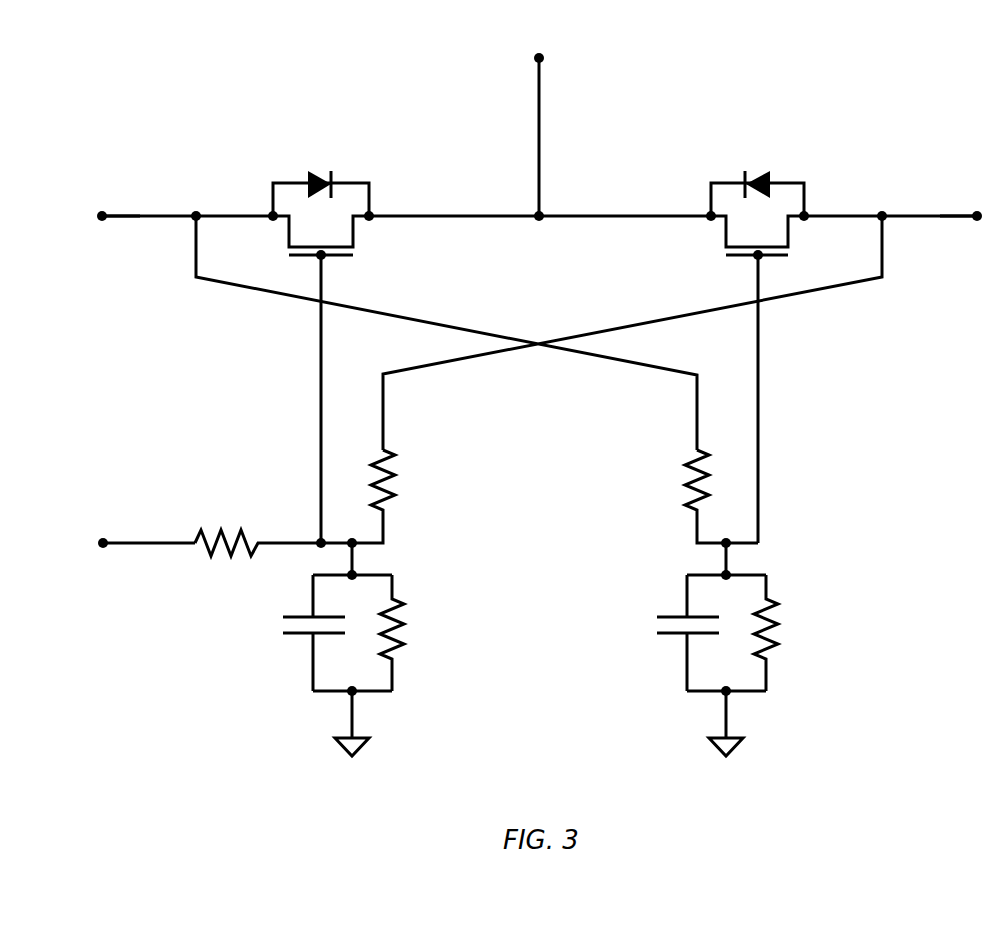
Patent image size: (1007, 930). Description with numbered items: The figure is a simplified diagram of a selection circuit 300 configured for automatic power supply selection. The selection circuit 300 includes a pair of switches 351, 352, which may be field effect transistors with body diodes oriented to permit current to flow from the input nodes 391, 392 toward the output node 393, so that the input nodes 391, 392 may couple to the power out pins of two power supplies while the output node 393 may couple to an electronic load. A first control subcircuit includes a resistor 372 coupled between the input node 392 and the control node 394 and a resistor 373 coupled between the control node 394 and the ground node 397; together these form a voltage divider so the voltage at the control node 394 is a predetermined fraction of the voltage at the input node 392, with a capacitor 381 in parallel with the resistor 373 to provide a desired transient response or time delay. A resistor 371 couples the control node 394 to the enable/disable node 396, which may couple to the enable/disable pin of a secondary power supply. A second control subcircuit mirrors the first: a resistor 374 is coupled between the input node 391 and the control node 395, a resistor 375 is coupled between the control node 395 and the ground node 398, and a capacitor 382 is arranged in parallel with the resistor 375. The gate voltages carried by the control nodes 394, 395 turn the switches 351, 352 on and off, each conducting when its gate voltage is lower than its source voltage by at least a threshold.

The selection circuit 300 is at (170, 61).
The switch 351 is at (313, 160).
The switch 352 is at (751, 160).
The resistor 371 is at (228, 520).
The resistor 372 is at (408, 482).
The resistor 373 is at (412, 630).
The resistor 374 is at (683, 482).
The resistor 375 is at (785, 630).
The capacitor 381 is at (275, 630).
The capacitor 382 is at (655, 630).
The input node 391 is at (94, 186).
The input node 392 is at (970, 200).
The output node 393 is at (531, 43).
The control node 394 is at (307, 404).
The control node 395 is at (783, 404).
The enable/disable node 396 is at (98, 516).
The ground node 397 is at (377, 747).
The ground node 398 is at (750, 747).